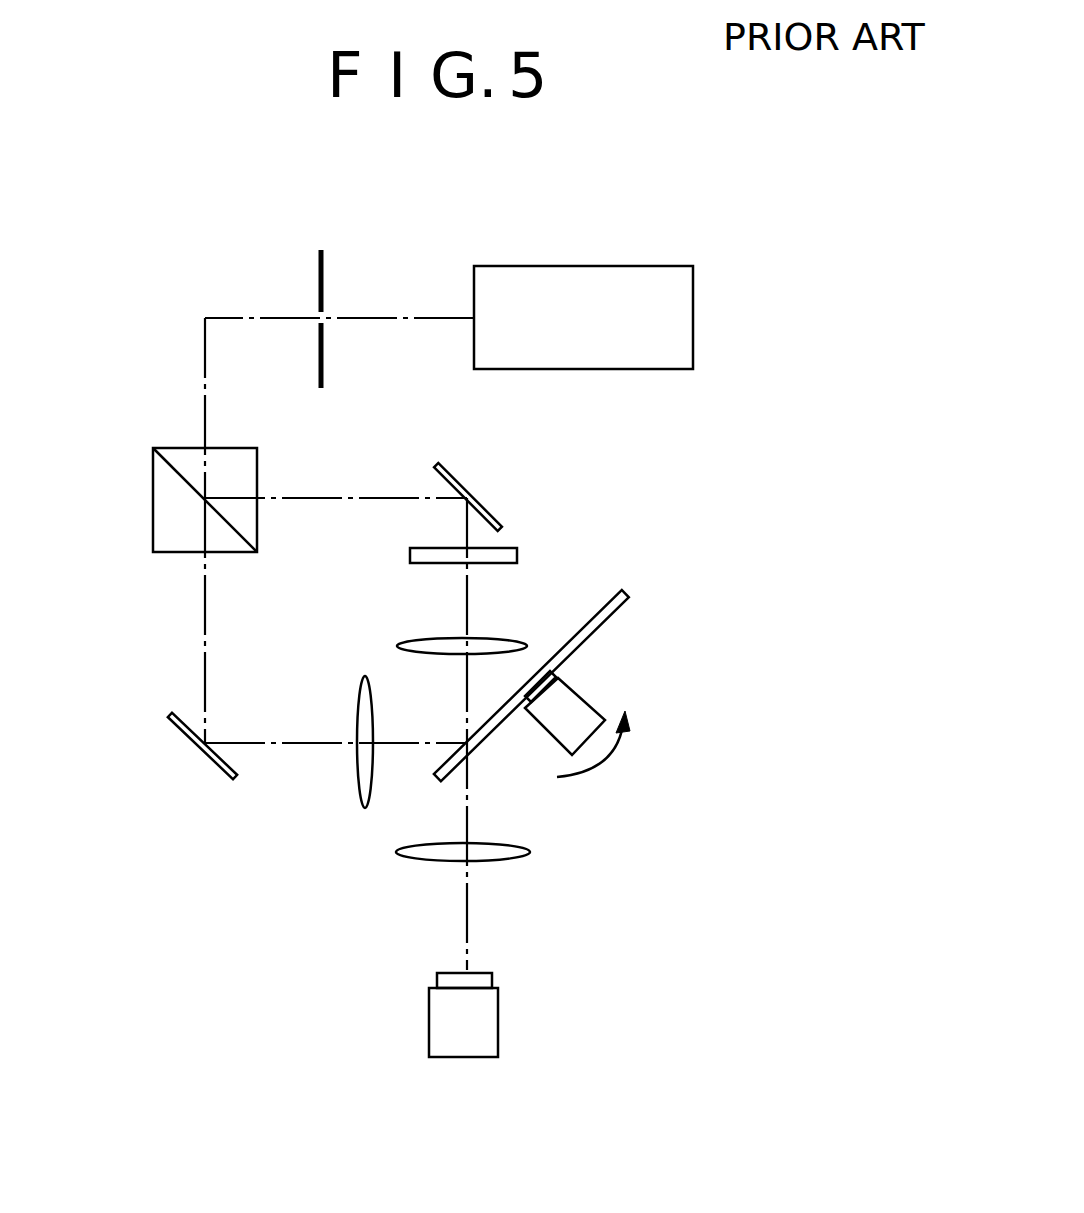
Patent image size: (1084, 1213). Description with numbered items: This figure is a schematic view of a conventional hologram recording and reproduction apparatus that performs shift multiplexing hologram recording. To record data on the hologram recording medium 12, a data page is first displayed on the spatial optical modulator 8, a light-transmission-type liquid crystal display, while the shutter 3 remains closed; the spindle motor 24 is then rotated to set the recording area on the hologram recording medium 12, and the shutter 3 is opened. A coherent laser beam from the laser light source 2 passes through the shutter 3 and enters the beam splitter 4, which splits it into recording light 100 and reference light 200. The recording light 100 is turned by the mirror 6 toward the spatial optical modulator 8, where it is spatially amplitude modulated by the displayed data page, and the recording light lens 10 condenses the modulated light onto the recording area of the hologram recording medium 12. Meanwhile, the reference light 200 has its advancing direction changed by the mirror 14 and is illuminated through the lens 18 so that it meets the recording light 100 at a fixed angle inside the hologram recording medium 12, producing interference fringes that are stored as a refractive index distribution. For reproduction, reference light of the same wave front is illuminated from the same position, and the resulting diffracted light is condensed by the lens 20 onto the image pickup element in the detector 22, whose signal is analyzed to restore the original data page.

The laser light source 2 is at (693, 318).
The shutter 3 is at (323, 292).
The beam splitter 4 is at (257, 470).
The mirror 6 is at (482, 502).
The spatial optical modulator 8 is at (520, 548).
The recording light lens 10 is at (497, 638).
The hologram recording medium 12 is at (618, 617).
The mirror 14 is at (185, 738).
The lens 18 is at (365, 797).
The lens 20 is at (417, 860).
The detector 22 is at (498, 1020).
The spindle motor 24 is at (583, 695).
The recording light 100 is at (370, 500).
The reference light 200 is at (205, 620).